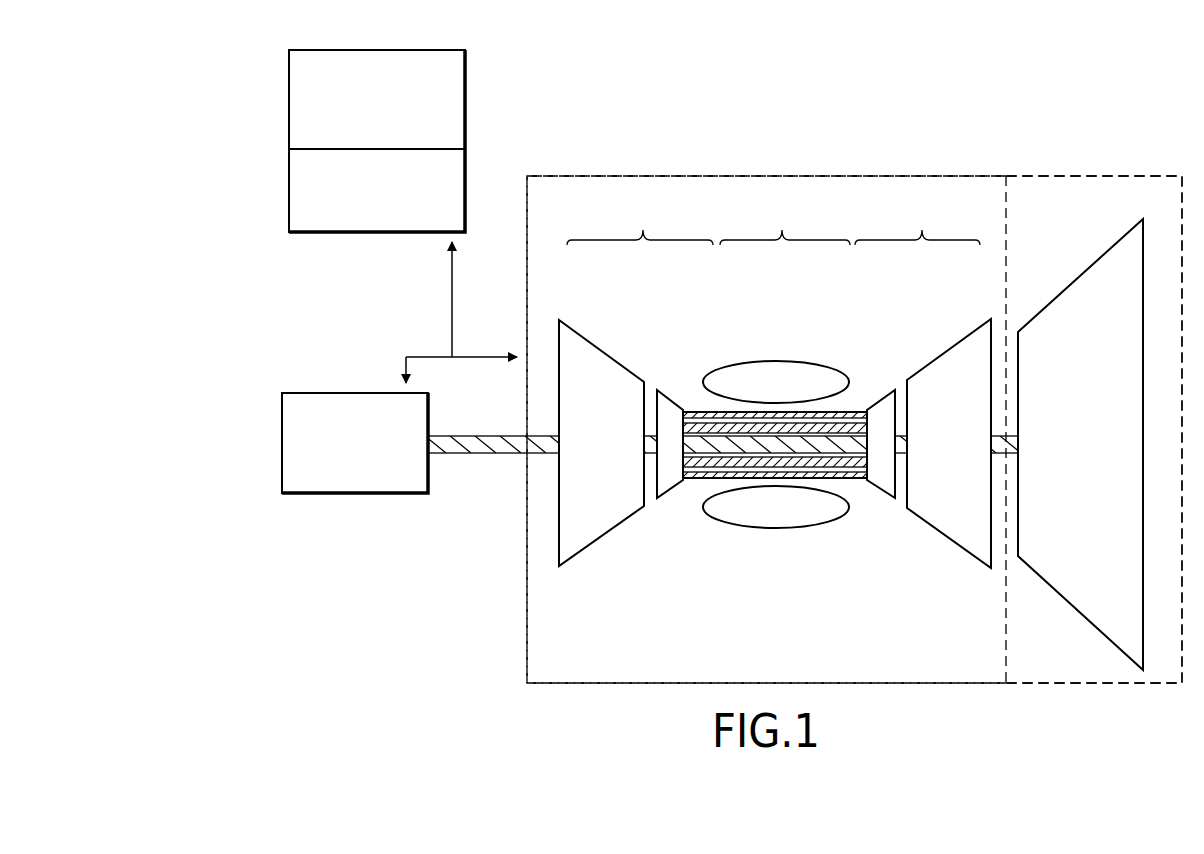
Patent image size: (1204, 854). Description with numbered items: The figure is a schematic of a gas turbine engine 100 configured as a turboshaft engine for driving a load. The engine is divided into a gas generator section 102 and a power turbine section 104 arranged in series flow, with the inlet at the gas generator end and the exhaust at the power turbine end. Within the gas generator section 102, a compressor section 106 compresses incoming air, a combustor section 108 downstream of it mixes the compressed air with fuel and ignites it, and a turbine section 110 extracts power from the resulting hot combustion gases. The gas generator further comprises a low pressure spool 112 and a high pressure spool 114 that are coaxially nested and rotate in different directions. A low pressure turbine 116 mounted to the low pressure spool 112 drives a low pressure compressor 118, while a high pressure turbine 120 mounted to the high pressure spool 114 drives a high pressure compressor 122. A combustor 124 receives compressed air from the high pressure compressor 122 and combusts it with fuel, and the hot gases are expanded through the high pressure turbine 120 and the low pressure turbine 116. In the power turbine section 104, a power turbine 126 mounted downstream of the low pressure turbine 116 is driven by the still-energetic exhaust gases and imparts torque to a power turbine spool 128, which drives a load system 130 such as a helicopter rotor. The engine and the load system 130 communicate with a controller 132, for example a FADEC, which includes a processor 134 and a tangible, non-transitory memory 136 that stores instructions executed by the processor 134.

The gas turbine engine 100 is at (1022, 145).
The gas generator section 102 is at (800, 176).
The power turbine section 104 is at (1113, 176).
The compressor section 106 is at (640, 222).
The combustor section 108 is at (785, 222).
The turbine section 110 is at (917, 221).
The low pressure spool 112 is at (648, 418).
The high pressure spool 114 is at (858, 410).
The low pressure turbine 116 is at (947, 343).
The low pressure compressor 118 is at (606, 353).
The high pressure turbine 120 is at (886, 394).
The high pressure compressor 122 is at (677, 404).
The combustor 124 is at (792, 528).
The power turbine 126 is at (1063, 285).
The power turbine spool 128 is at (1013, 432).
The load system 130 is at (355, 493).
The controller 132 is at (289, 97).
The processor 134 is at (367, 112).
The memory 136 is at (367, 202).